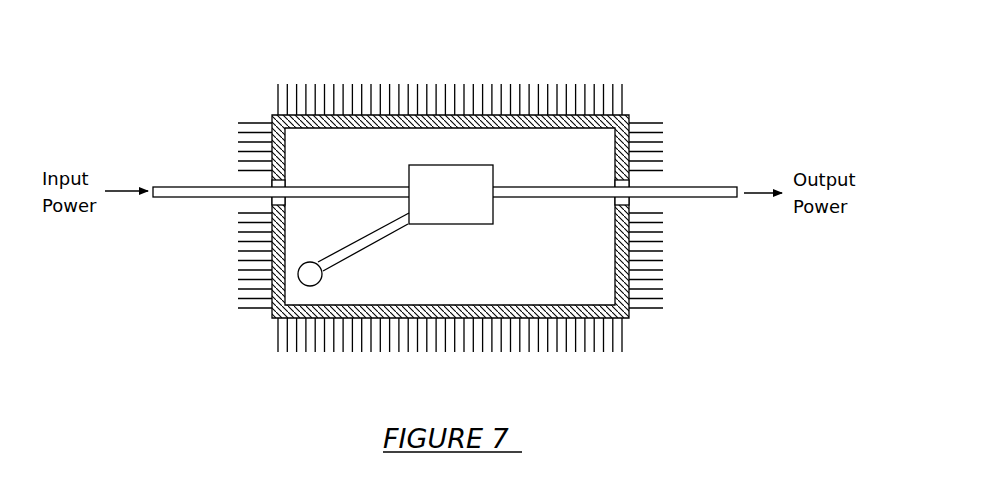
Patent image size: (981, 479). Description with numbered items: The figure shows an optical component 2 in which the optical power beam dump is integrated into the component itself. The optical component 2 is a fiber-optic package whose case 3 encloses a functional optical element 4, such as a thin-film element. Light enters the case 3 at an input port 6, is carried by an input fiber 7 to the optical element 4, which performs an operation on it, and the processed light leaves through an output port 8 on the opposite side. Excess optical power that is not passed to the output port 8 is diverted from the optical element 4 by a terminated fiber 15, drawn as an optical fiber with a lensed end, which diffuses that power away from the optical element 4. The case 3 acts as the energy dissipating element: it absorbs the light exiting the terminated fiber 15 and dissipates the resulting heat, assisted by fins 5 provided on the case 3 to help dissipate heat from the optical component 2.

The optical component 2 is at (330, 72).
The case 3 is at (606, 118).
The optical element 4 is at (458, 205).
The fins 5 is at (401, 82).
The input port 6 is at (276, 203).
The input fiber 7 is at (201, 186).
The output port 8 is at (632, 205).
The terminated fiber 15 is at (360, 248).